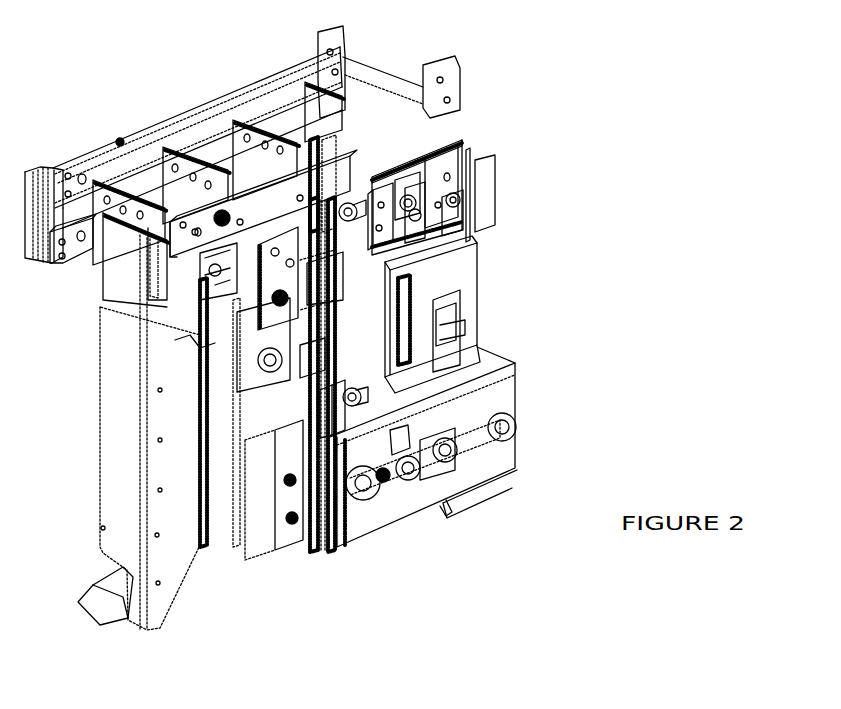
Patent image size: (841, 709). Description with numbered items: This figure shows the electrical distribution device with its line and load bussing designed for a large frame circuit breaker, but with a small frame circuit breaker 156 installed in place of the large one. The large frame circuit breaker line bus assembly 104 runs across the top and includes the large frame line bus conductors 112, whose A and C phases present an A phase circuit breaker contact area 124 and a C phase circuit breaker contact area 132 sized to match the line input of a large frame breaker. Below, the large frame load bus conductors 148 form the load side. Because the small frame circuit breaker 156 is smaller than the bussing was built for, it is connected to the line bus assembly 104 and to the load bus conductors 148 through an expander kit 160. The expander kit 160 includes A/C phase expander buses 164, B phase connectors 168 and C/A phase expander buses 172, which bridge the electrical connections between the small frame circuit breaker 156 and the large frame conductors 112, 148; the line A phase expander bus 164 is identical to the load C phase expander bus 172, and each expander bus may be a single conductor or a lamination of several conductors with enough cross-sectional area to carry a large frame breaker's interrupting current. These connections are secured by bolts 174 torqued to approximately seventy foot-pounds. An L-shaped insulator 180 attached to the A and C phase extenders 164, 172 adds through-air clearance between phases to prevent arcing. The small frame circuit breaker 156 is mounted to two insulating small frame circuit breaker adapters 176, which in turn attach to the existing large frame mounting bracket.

The large frame circuit breaker line bus assembly 104 is at (143, 96).
The large frame line bus conductors 112 is at (313, 97).
The A phase circuit breaker contact area 124 is at (323, 218).
The A/C phase expander bus 164 is at (342, 202).
The bolts 174 is at (359, 219).
The L-shaped insulator 180 is at (390, 190).
The B phase connector 168 is at (403, 186).
The C phase circuit breaker contact area 132 is at (457, 143).
The C/A phase expander bus 172 is at (458, 168).
The expander kit 160 is at (497, 174).
The small frame circuit breaker 156 is at (468, 280).
The small frame circuit breaker adapter 176 is at (332, 291).
The load bus conductors 148 is at (322, 435).